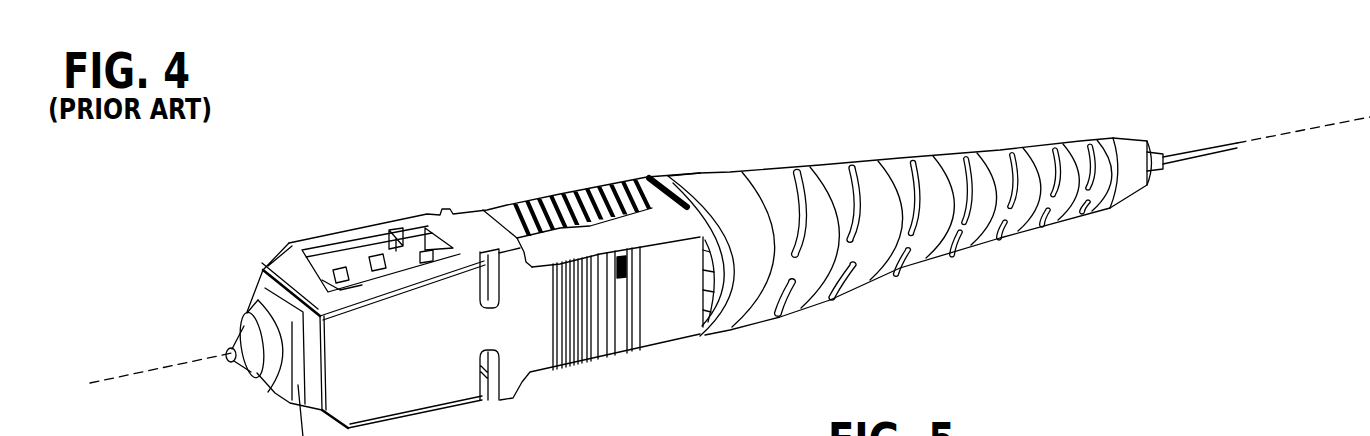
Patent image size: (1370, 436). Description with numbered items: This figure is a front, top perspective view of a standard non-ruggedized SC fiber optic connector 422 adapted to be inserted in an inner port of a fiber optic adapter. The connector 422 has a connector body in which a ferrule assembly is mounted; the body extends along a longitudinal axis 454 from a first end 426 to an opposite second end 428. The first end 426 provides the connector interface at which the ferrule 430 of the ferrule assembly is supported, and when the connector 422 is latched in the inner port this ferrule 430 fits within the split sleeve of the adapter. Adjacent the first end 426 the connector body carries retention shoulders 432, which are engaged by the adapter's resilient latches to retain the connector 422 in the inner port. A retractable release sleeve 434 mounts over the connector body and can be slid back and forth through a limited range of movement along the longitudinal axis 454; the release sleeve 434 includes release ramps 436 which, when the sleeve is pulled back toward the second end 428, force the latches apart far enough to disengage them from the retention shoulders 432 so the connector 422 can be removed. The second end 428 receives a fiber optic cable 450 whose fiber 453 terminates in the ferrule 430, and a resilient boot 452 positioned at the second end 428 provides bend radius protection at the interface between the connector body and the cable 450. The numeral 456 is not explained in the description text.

The fiber optic connector 422 is at (514, 183).
The first end 426 is at (263, 287).
The second end 428 is at (653, 177).
The ferrule 430 is at (240, 333).
The retention shoulders 432 is at (333, 273).
The release sleeve 434 is at (457, 227).
The release ramps 436 is at (330, 277).
The fiber optic cable 450 is at (1120, 147).
The resilient boot 452 is at (860, 180).
The fiber 453 is at (1190, 150).
The longitudinal axis 454 is at (147, 363).
The ferrule end face 456 is at (233, 353).